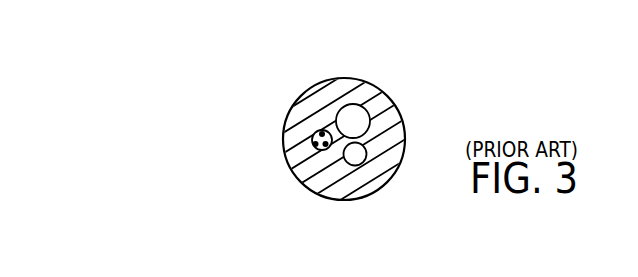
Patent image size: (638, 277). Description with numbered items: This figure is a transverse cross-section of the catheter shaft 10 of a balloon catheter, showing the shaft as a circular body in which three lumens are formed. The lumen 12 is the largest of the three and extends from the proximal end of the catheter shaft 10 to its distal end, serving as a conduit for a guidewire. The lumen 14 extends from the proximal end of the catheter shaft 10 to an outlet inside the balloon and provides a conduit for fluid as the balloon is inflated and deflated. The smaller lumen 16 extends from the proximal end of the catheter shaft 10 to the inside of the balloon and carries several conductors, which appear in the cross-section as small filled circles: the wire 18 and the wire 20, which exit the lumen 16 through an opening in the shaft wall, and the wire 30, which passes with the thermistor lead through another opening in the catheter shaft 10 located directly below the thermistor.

The catheter shaft 10 is at (352, 79).
The lumen 12 is at (370, 118).
The lumen 14 is at (364, 165).
The lumen 16 is at (317, 150).
The wire 18 is at (312, 144).
The wire 20 is at (316, 144).
The wire 30 is at (326, 144).